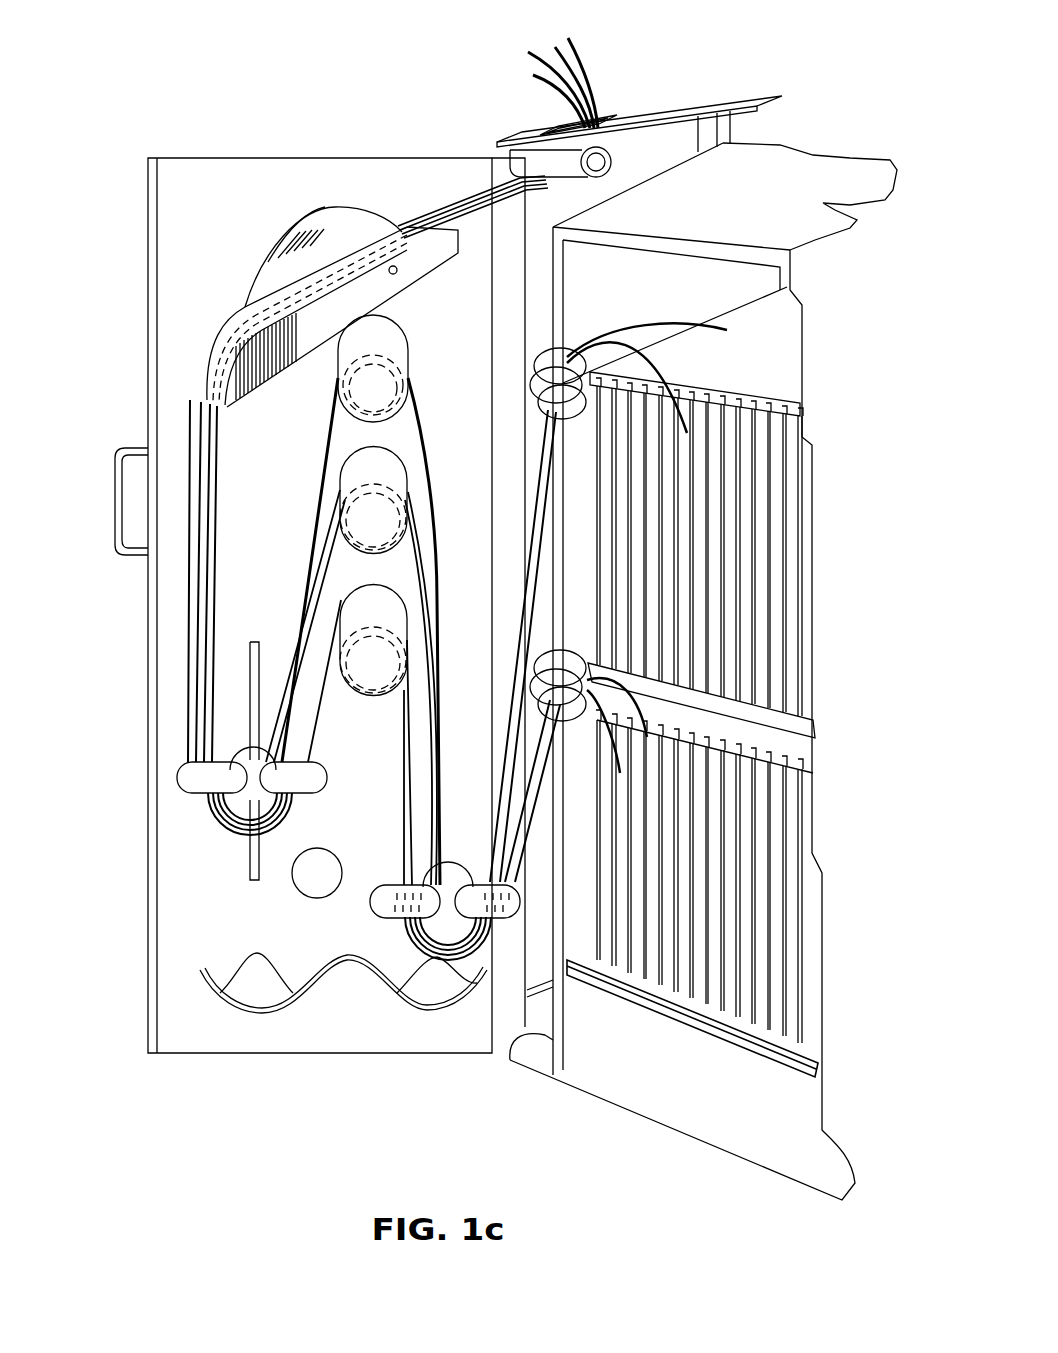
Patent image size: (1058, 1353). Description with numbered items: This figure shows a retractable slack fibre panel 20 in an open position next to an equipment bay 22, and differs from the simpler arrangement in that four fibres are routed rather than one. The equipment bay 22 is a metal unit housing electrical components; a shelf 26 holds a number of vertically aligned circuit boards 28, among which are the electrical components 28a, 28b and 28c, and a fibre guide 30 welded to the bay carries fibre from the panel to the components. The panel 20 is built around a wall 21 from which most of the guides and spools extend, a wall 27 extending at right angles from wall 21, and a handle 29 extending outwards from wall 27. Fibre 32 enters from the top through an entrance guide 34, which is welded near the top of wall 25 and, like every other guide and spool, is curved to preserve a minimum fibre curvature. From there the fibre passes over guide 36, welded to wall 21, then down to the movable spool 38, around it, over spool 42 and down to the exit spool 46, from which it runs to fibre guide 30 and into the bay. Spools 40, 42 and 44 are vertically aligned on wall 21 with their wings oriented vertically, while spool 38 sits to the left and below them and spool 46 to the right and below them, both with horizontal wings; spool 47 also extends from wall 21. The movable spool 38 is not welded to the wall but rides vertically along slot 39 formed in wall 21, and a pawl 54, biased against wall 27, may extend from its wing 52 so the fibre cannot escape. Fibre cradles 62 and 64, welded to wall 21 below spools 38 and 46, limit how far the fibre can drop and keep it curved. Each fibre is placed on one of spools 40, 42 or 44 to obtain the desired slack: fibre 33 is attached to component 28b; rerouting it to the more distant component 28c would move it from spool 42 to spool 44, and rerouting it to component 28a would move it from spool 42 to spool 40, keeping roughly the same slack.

The retractable slack fibre panel 20 is at (208, 152).
The wall 21 is at (278, 171).
The equipment bay 22 is at (838, 156).
The wall 25 is at (645, 95).
The shelf 26 is at (808, 1052).
The wall 27 is at (148, 257).
The circuit boards 28 is at (795, 970).
The electrical component 28a is at (607, 460).
The electrical component 28b is at (698, 537).
The electrical component 28c is at (795, 642).
The handle 29 is at (125, 560).
The fibre guide 30 is at (585, 340).
The fibre 32 is at (595, 63).
The fibre 33 is at (668, 370).
The entrance guide 34 is at (480, 170).
The guide 36 is at (393, 228).
The movable spool 38 is at (230, 825).
The slot 39 is at (249, 655).
The spool 40 is at (342, 404).
The spool 42 is at (360, 513).
The spool 44 is at (338, 648).
The exit spool 46 is at (440, 935).
The spool 47 is at (318, 876).
The wing 52 is at (200, 778).
The pawl 54 is at (166, 774).
The fibre cradle 62 is at (250, 1010).
The fibre cradle 64 is at (456, 995).